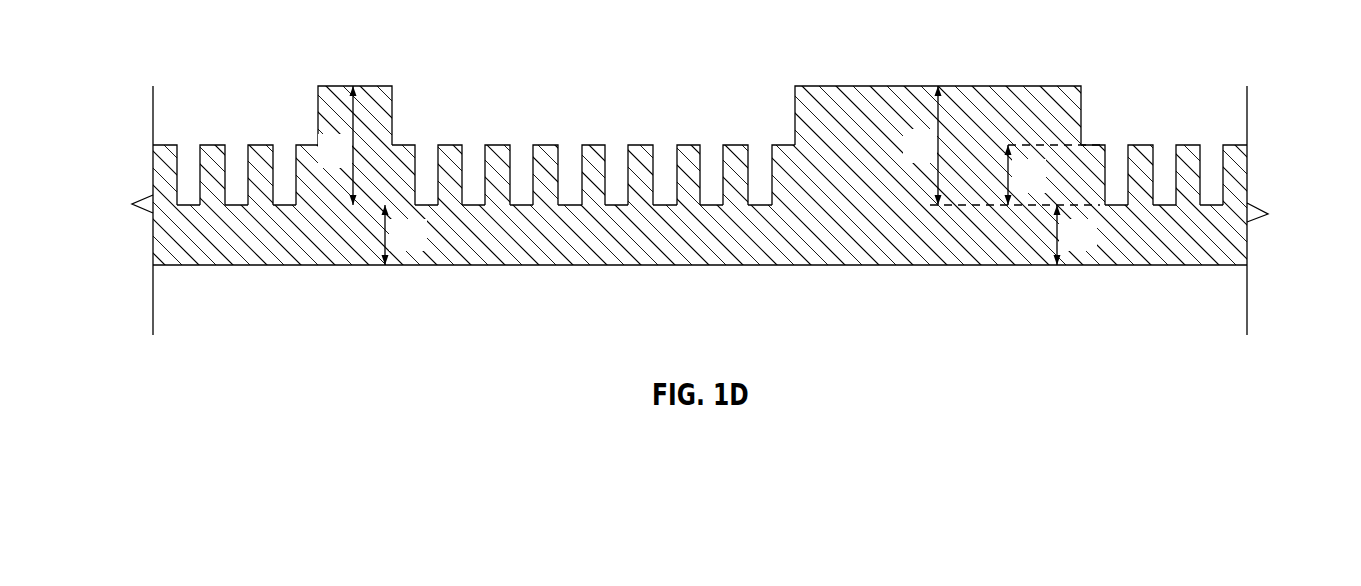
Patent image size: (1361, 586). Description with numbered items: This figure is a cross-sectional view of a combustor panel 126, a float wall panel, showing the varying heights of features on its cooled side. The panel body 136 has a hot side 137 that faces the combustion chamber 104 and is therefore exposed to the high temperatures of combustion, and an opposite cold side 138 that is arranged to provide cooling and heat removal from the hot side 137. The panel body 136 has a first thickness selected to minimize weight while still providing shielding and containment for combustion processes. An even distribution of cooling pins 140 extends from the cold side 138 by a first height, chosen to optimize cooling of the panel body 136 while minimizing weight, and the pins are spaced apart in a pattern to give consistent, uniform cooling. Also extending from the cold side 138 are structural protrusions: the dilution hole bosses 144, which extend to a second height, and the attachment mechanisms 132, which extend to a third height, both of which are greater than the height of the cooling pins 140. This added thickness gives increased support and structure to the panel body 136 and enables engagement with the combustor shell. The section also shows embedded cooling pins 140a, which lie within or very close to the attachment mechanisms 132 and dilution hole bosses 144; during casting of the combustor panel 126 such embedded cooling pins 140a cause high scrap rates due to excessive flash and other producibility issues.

The combustion chamber 104 is at (722, 331).
The combustor panel 126 is at (226, 44).
The attachment mechanism 132 is at (382, 122).
The panel body 136 is at (1224, 229).
The hot side 137 is at (553, 262).
The cold side 138 is at (713, 200).
The cooling pins 140 is at (162, 146).
The embedded cooling pins 140a is at (400, 167).
The dilution hole boss 144 is at (1068, 122).